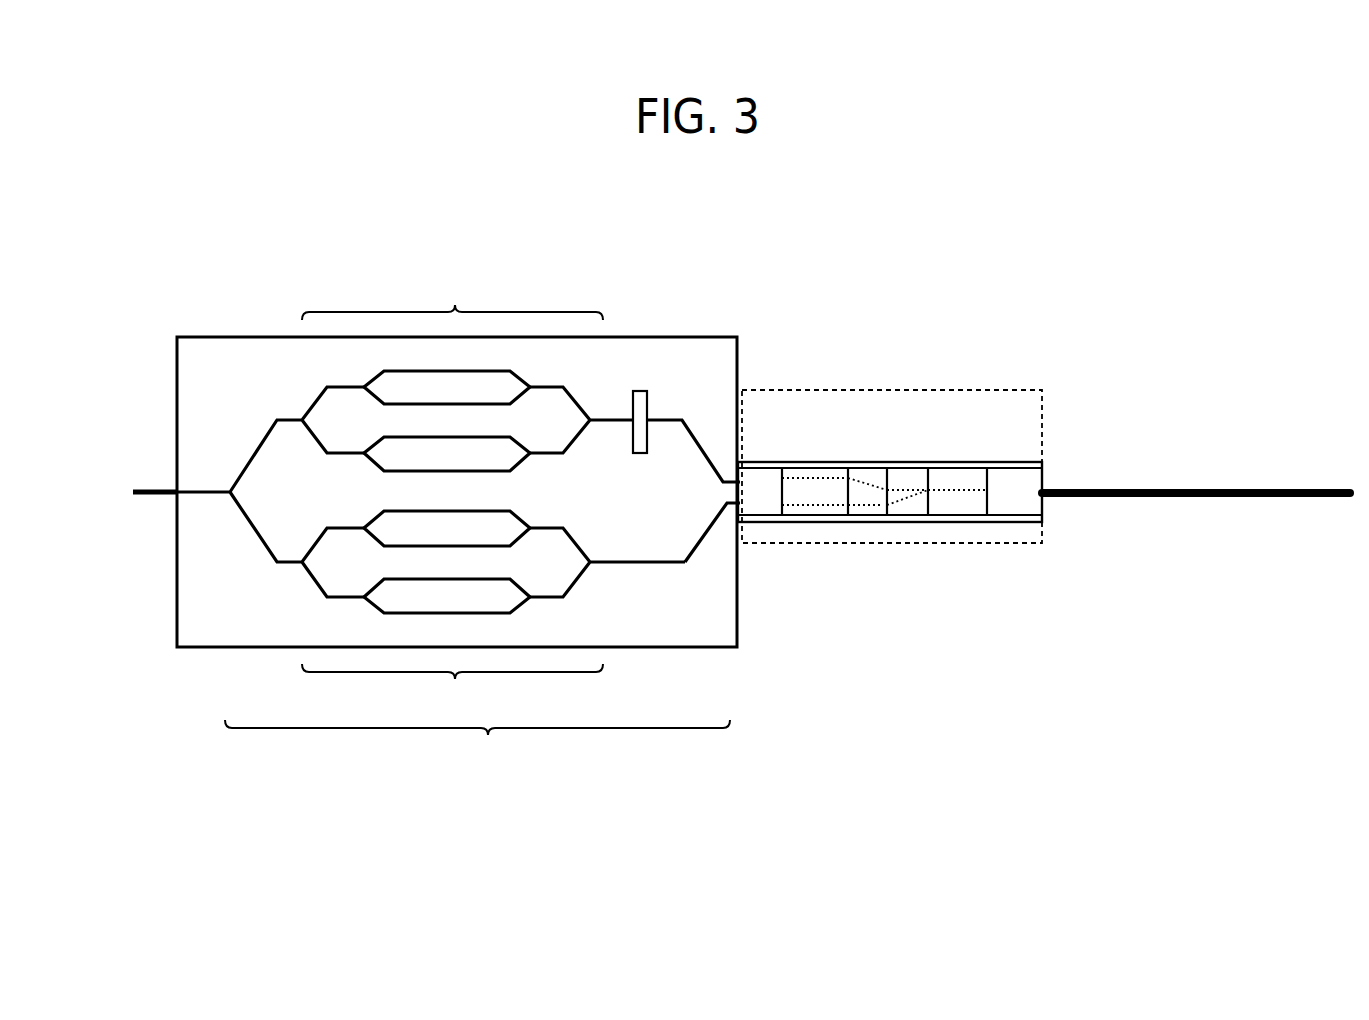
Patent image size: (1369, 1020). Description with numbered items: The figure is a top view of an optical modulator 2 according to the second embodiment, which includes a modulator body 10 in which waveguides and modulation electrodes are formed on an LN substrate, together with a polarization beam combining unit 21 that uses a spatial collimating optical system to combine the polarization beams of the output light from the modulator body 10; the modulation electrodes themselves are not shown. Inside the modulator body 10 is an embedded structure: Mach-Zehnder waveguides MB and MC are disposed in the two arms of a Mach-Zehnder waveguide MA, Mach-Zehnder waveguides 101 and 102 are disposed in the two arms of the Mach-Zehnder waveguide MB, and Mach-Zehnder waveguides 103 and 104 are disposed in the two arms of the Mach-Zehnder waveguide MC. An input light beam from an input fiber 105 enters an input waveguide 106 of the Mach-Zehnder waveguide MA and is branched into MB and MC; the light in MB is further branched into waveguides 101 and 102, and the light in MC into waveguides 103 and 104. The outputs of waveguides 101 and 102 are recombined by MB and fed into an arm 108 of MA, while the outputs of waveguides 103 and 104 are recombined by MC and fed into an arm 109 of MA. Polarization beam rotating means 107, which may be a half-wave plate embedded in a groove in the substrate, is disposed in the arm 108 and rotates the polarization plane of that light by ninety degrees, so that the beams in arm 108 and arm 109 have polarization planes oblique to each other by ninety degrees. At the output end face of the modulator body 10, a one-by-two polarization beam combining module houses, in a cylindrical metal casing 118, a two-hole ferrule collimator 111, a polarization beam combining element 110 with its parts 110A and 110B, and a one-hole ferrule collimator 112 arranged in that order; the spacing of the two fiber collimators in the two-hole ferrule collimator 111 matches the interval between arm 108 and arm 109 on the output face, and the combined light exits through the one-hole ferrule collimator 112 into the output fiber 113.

The optical modulator 2 is at (814, 236).
The modulator body 10 is at (690, 337).
The polarization beam combining unit 21 is at (985, 390).
The Mach-Zehnder waveguide 101 is at (512, 389).
The Mach-Zehnder waveguide 102 is at (512, 455).
The Mach-Zehnder waveguide 103 is at (512, 530).
The Mach-Zehnder waveguide 104 is at (512, 598).
The input fiber 105 is at (157, 488).
The input waveguide 106 is at (203, 488).
The polarization beam rotating means 107 is at (639, 391).
The arm 108 is at (700, 445).
The arm 109 is at (700, 543).
The polarization beam combining element 110 is at (960, 330).
The half-wave plate 110A is at (866, 466).
The polarization beam combiner 110B is at (915, 466).
The two-hole ferrule collimator 111 is at (752, 468).
The one-hole ferrule collimator 112 is at (1007, 468).
The output optical fiber 113 is at (1240, 488).
The casing 118 is at (825, 468).
The Mach-Zehnder waveguide MA is at (477, 744).
The Mach-Zehnder waveguide MB is at (452, 297).
The Mach-Zehnder waveguide MC is at (452, 686).